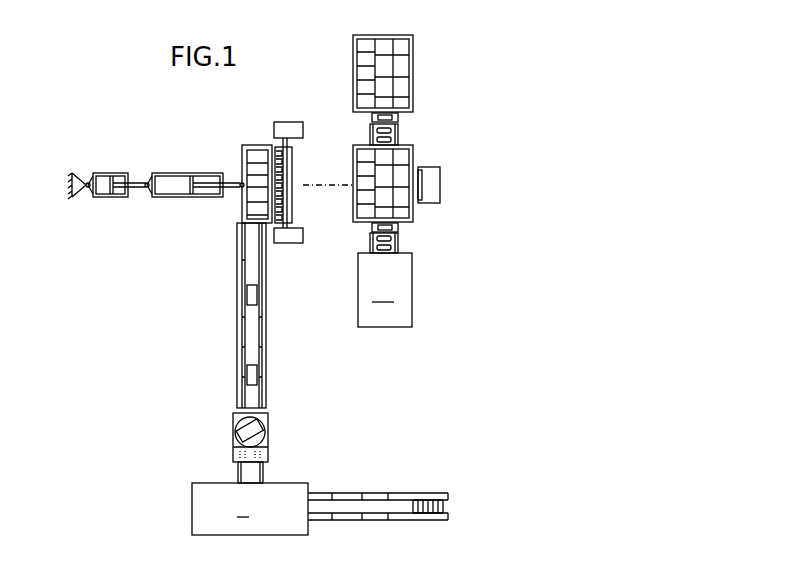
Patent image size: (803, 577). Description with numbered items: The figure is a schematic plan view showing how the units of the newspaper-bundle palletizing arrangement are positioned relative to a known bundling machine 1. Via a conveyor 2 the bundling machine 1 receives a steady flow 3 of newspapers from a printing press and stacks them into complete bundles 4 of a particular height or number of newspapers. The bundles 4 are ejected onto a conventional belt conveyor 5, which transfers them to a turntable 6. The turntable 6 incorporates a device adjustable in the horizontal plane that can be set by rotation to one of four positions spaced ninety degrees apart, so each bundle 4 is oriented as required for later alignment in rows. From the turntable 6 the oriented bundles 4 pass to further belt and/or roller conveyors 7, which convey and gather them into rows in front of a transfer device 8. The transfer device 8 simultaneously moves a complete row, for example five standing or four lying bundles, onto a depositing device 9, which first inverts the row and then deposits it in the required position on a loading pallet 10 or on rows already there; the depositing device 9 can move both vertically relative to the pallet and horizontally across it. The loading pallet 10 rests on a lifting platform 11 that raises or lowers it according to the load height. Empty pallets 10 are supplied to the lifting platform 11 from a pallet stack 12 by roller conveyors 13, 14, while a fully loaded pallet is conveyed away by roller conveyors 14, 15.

The bundling machine 1 is at (250, 509).
The conveyor 2 is at (366, 491).
The flow of newspapers 3 is at (448, 507).
The bundles 4 is at (403, 52).
The belt conveyor 5 is at (250, 474).
The turntable 6 is at (273, 441).
The belt and/or roller conveyors 7 is at (250, 335).
The transfer device 8 is at (237, 167).
The depositing device 9 is at (297, 168).
The loading pallet 10 is at (413, 145).
The lifting platform 11 is at (442, 198).
The pallet stack 12 is at (385, 290).
The roller conveyor 13 is at (405, 246).
The roller conveyor 14 is at (405, 140).
The roller conveyor 15 is at (367, 116).